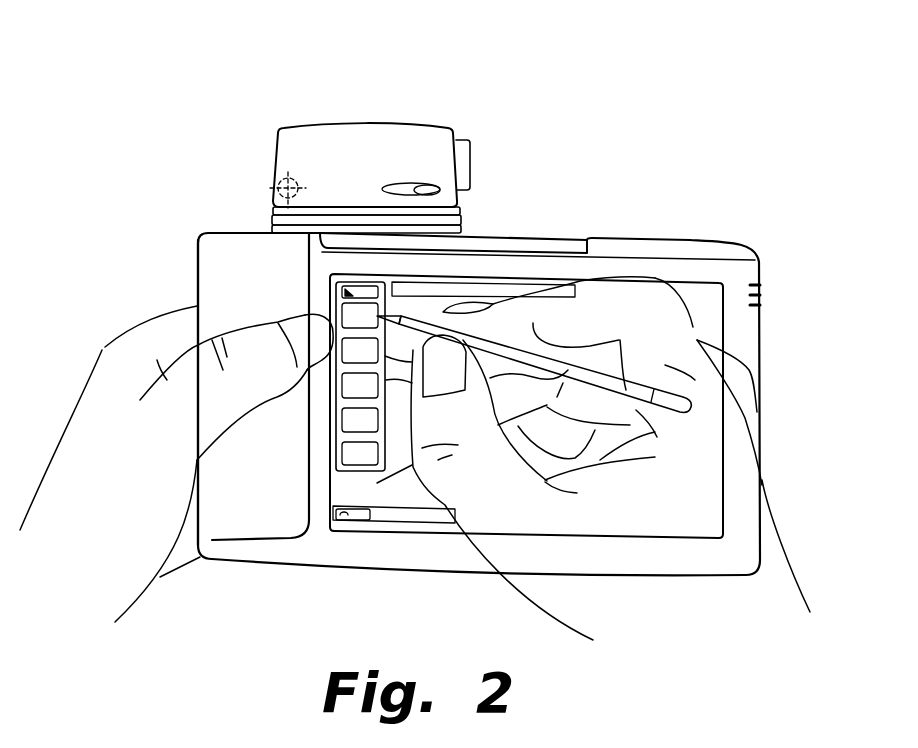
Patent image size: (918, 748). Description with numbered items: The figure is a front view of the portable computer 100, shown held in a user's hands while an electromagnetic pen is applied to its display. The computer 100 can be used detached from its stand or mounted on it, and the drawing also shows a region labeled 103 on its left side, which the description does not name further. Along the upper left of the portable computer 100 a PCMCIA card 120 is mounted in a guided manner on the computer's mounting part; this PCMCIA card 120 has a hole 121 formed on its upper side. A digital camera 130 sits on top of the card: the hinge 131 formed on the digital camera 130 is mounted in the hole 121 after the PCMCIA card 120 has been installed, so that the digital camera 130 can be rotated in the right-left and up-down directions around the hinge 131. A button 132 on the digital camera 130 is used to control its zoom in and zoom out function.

The portable computer 100 is at (675, 201).
The grip portion 103 is at (199, 265).
The PCMCIA card 120 is at (273, 217).
The hole 121 is at (275, 204).
The digital camera 130 is at (377, 122).
The hinge 131 is at (286, 176).
The button 132 is at (440, 184).